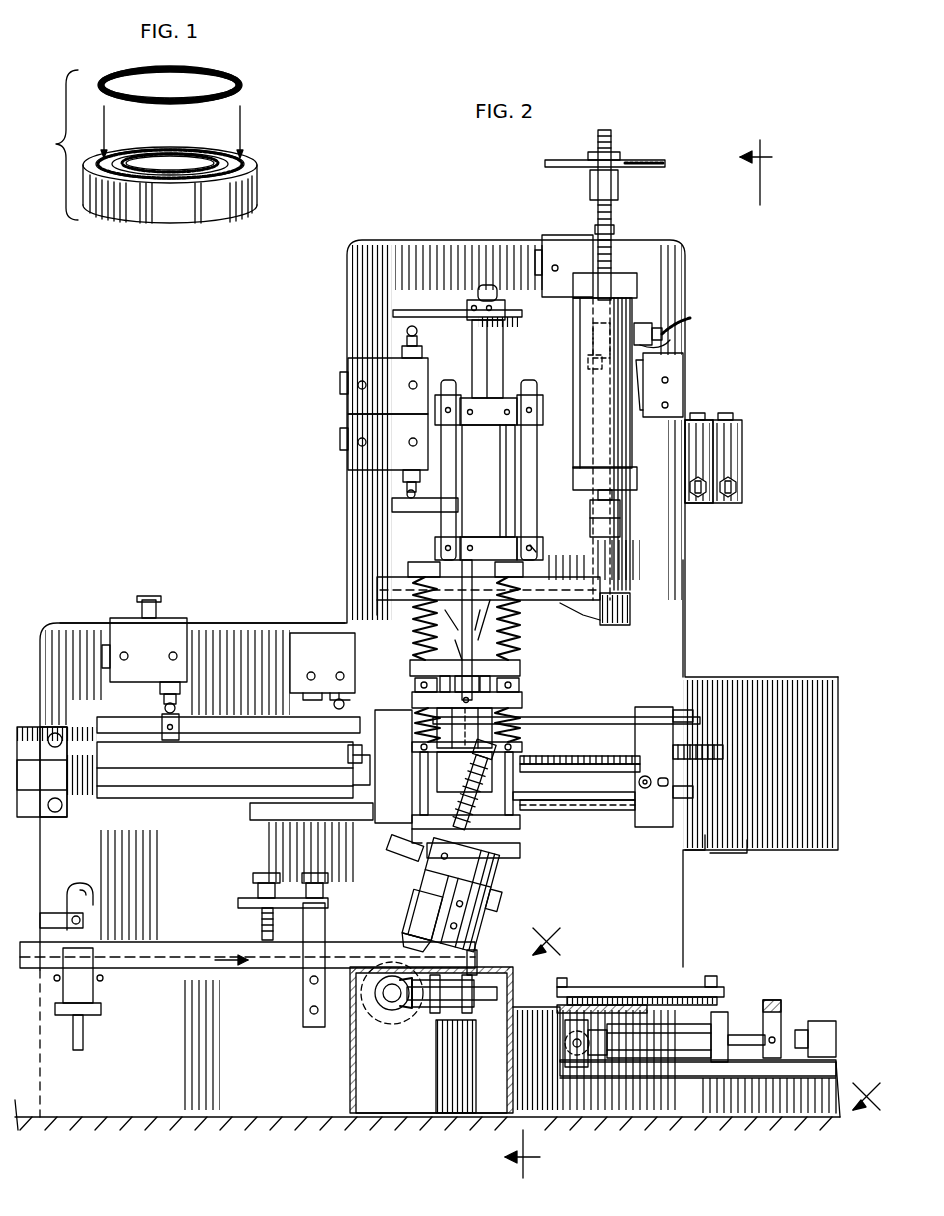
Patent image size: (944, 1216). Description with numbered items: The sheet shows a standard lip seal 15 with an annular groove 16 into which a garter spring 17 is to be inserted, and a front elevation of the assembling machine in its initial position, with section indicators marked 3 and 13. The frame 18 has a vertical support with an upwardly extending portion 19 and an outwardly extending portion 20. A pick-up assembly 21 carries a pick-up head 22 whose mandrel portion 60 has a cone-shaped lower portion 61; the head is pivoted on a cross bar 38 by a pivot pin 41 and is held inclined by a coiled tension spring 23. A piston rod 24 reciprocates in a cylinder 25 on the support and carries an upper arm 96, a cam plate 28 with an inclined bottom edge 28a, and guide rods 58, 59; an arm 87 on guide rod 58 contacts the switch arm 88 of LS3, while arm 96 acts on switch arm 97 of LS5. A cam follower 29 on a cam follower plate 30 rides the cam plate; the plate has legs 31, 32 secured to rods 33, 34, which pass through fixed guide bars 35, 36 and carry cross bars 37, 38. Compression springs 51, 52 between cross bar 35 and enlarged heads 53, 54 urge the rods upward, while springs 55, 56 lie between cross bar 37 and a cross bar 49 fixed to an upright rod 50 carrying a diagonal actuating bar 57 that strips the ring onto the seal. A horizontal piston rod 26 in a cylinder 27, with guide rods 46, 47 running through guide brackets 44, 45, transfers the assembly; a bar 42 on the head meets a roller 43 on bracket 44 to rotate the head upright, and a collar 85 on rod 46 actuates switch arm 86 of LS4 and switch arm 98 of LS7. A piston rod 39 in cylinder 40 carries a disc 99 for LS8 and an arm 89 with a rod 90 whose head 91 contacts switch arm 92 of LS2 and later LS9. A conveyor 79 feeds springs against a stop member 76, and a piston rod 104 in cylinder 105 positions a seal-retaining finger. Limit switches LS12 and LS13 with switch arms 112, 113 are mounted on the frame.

In FIG. 1, the lip seal 15 is at (256, 192).
In FIG. 2, the lip seal 15 is at (645, 990).
In FIG. 1, the annular groove 16 is at (244, 166).
In FIG. 2, the annular groove 16 is at (620, 985).
In FIG. 1, the garter spring 17 is at (241, 85).
In FIG. 2, the frame 18 is at (692, 643).
In FIG. 2, the upwardly extending portion 19 is at (676, 622).
In FIG. 2, the outwardly extending portion 20 is at (222, 628).
In FIG. 2, the pick-up assembly 21 is at (526, 688).
In FIG. 2, the pick-up head 22 is at (414, 900).
In FIG. 2, the coiled tension spring 23 is at (382, 848).
In FIG. 2, the piston rod 24 is at (478, 362).
In FIG. 2, the cylinder 25 is at (488, 479).
In FIG. 2, the piston rod and extension 26 is at (608, 792).
In FIG. 2, the horizontally positioned cylinder 27 is at (200, 800).
In FIG. 2, the cam plate 28 is at (632, 607).
In FIG. 2, the bottom edge of cam plate 28a is at (583, 628).
In FIG. 2, the cam follower 29 is at (522, 638).
In FIG. 2, the cam follower plate 30 is at (522, 663).
In FIG. 2, the leg 31 is at (415, 686).
In FIG. 2, the leg 32 is at (519, 687).
In FIG. 2, the rod 33 is at (412, 795).
In FIG. 2, the rod 34 is at (525, 801).
In FIG. 2, the guide bar 35 is at (410, 666).
In FIG. 2, the guide bar 36 is at (520, 827).
In FIG. 2, the cross bar 37 is at (412, 752).
In FIG. 2, the cross bar 38 is at (522, 855).
In FIG. 2, the piston rod 39 is at (614, 520).
In FIG. 2, the cylinder 40 is at (622, 444).
In FIG. 2, the pivot pin 41 is at (440, 856).
In FIG. 2, the upwardly extending bar 42 is at (545, 753).
In FIG. 2, the roller 43 is at (646, 776).
In FIG. 2, the guide bracket 44 is at (692, 850).
In FIG. 2, the guide bracket 45 is at (380, 822).
In FIG. 2, the guide rod 46 is at (218, 722).
In FIG. 2, the guide rod 47 is at (263, 822).
In FIG. 2, the cross bar 49 is at (410, 725).
In FIG. 2, the upright rod 50 is at (523, 612).
In FIG. 2, the coiled compression spring 51 is at (413, 624).
In FIG. 2, the coiled compression spring 52 is at (516, 582).
In FIG. 2, the enlarged head 53 is at (410, 566).
In FIG. 2, the enlarged head 54 is at (532, 548).
In FIG. 2, the coiled compression spring 55 is at (348, 752).
In FIG. 2, the coiled compression spring 56 is at (525, 726).
In FIG. 2, the actuating bar 57 is at (420, 770).
In FIG. 2, the guide rod 58 is at (452, 485).
In FIG. 2, the guide rod 59 is at (534, 476).
In FIG. 2, the mandrel portion 60 is at (405, 905).
In FIG. 2, the cone-shaped lower portion 61 is at (420, 930).
In FIG. 2, the stop member 76 is at (478, 962).
In FIG. 2, the conveyor 79 is at (222, 970).
In FIG. 2, the collar 85 is at (171, 742).
In FIG. 2, the switch arm 86 is at (163, 707).
In FIG. 2, the arm 87 is at (416, 512).
In FIG. 2, the switch arm 88 is at (404, 496).
In FIG. 2, the arm 89 is at (622, 502).
In FIG. 2, the upwardly extending rod 90 is at (590, 404).
In FIG. 2, the head 91 is at (587, 363).
In FIG. 2, the switch arm 92 is at (592, 350).
In FIG. 2, the upper arm 96 is at (440, 308).
In FIG. 2, the switch arm 97 is at (411, 326).
In FIG. 2, the switch arm 98 is at (337, 710).
In FIG. 2, the disc 99 is at (665, 167).
In FIG. 2, the piston rod 104 is at (748, 1028).
In FIG. 2, the cylinder 105 is at (668, 1072).
In FIG. 2, the switch arm 112 is at (738, 500).
In FIG. 2, the switch arm 113 is at (706, 480).
In FIG. 2, the limit switch LS2 is at (664, 342).
In FIG. 2, the limit switch LS3 is at (352, 462).
In FIG. 2, the limit switch LS4 is at (115, 628).
In FIG. 2, the limit switch LS5 is at (352, 362).
In FIG. 2, the limit switch LS7 is at (298, 690).
In FIG. 2, the limit switch LS8 is at (612, 243).
In FIG. 2, the limit switch LS9 is at (684, 372).
In FIG. 2, the limit switch LS12 is at (744, 480).
In FIG. 2, the limit switch LS13 is at (708, 503).
In FIG. 2, the section line 3- 3 is at (647, 659).
In FIG. 2, the section line 13- 13 is at (712, 1005).